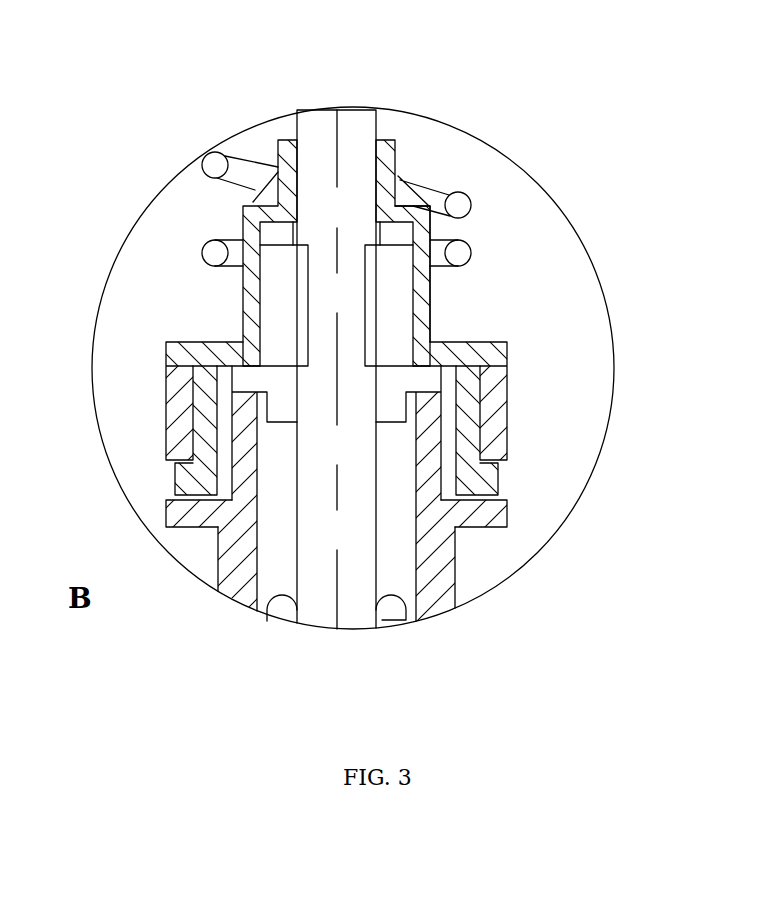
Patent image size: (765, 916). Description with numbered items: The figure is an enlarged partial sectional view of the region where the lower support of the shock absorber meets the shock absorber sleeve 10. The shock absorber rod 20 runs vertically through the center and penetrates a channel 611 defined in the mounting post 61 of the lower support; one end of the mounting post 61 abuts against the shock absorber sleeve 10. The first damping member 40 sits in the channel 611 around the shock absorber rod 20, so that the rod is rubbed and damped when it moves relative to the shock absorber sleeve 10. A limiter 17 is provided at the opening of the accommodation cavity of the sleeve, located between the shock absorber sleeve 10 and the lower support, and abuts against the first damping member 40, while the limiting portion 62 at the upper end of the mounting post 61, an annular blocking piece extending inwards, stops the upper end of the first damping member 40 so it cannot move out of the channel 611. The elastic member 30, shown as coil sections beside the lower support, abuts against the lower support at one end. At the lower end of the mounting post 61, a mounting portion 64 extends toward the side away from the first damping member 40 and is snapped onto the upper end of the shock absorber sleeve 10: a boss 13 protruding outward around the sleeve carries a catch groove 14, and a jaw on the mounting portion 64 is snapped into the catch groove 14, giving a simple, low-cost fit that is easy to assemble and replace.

The shock absorber sleeve 10 is at (435, 583).
The boss 13 is at (490, 405).
The catch groove 14 is at (495, 513).
The limiter 17 is at (283, 382).
The shock absorber rod 20 is at (333, 148).
The elastic member 30 is at (418, 182).
The first damping member 40 is at (275, 310).
The mounting post 61 is at (420, 288).
The channel 611 is at (402, 237).
The limiting portion 62 is at (413, 205).
The mounting portion 64 is at (470, 425).